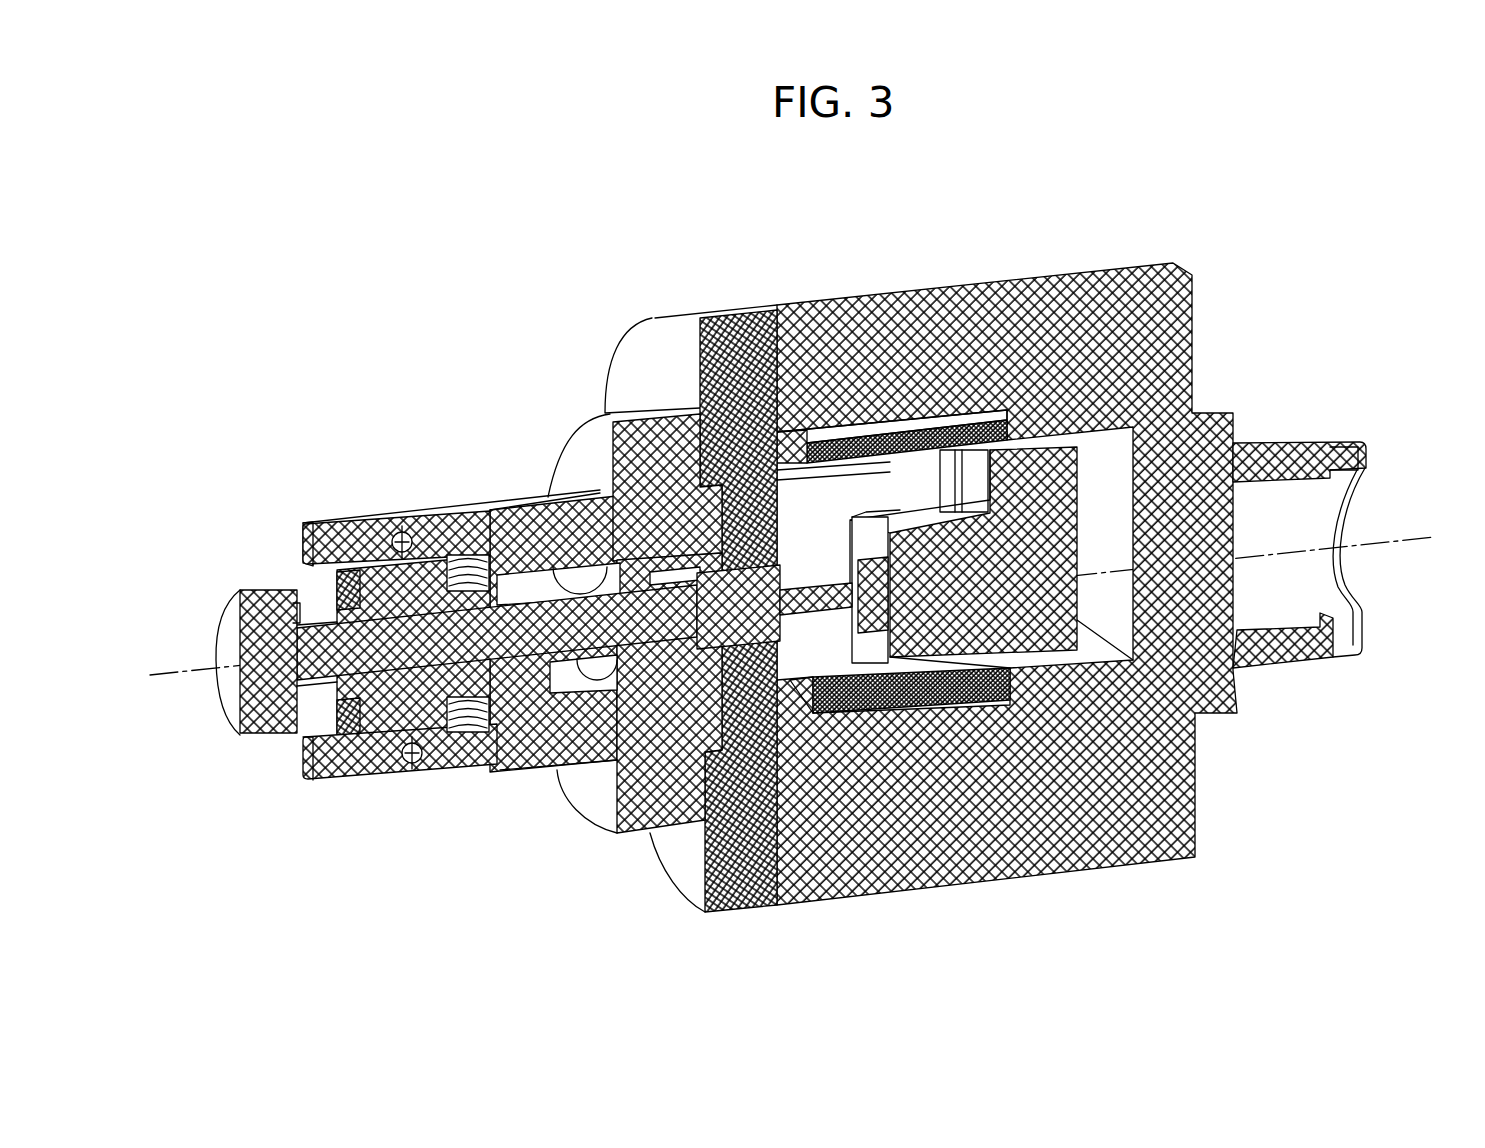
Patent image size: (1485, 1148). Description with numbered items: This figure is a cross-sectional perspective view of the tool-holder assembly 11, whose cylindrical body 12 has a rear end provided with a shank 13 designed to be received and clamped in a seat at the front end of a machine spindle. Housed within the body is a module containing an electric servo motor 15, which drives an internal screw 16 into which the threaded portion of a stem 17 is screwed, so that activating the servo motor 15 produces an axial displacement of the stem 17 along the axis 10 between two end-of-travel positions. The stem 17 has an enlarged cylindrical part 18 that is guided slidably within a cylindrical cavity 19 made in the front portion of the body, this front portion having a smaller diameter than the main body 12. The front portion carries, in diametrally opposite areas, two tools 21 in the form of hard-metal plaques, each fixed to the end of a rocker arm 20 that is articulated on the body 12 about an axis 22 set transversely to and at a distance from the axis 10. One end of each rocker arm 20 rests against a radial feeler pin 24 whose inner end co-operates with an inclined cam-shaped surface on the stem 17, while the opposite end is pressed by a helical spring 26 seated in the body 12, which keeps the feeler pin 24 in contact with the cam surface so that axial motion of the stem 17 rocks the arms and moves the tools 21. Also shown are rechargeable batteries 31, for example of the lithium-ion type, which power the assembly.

The axis 10 is at (186, 676).
The tool-holder assembly 11 is at (550, 277).
The cylindrical body 12 is at (891, 282).
The shank 13 is at (1275, 446).
The electric servo motor 15 is at (1097, 600).
The valve member 16 is at (838, 622).
The stem 17 is at (577, 666).
The enlarged cylindrical part 18 is at (683, 660).
The cylindrical cavity 19 is at (542, 555).
The rocker arm 20 is at (370, 533).
The tool 21 is at (300, 536).
The axis 22 is at (413, 510).
The radial feeler pin 24 is at (298, 582).
The helical spring 26 is at (479, 560).
The rechargeable batteries 31 is at (906, 420).